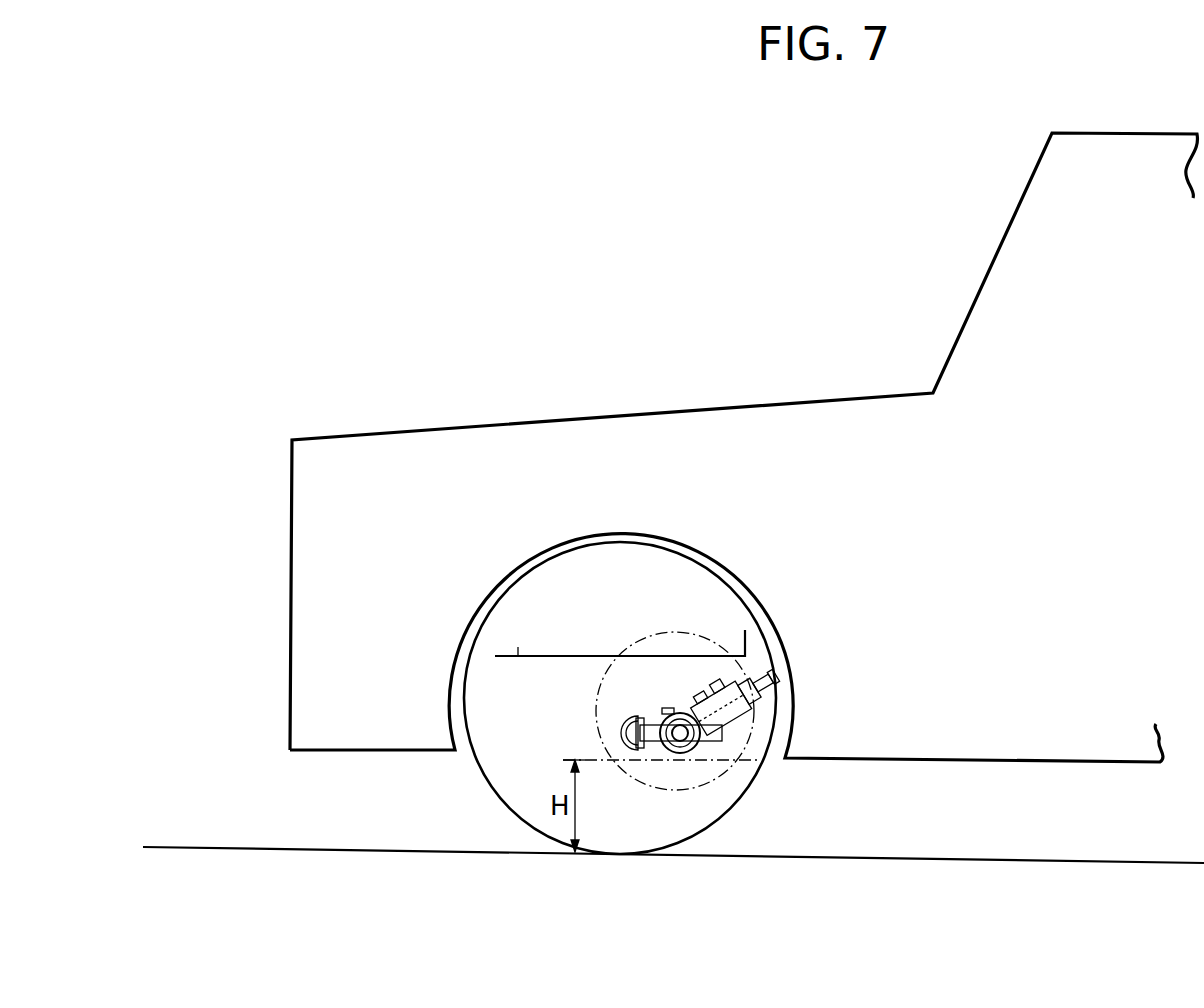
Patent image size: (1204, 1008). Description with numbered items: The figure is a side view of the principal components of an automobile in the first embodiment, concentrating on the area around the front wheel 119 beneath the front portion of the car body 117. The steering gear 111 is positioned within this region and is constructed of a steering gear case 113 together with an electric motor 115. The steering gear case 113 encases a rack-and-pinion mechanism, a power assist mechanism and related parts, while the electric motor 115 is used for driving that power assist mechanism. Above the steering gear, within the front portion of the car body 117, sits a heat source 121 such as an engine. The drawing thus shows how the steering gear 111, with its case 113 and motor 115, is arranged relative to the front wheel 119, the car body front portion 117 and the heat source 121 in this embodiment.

The steering gear 111 is at (703, 765).
The steering gear case 113 is at (703, 746).
The electric motor 115 is at (617, 733).
The front portion of the car body 117 is at (633, 442).
The front wheel 119 is at (490, 782).
The heat source 121 is at (518, 656).